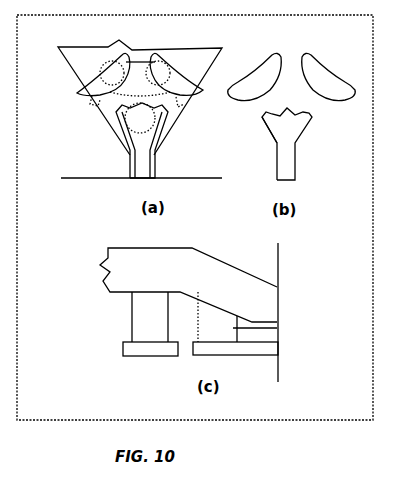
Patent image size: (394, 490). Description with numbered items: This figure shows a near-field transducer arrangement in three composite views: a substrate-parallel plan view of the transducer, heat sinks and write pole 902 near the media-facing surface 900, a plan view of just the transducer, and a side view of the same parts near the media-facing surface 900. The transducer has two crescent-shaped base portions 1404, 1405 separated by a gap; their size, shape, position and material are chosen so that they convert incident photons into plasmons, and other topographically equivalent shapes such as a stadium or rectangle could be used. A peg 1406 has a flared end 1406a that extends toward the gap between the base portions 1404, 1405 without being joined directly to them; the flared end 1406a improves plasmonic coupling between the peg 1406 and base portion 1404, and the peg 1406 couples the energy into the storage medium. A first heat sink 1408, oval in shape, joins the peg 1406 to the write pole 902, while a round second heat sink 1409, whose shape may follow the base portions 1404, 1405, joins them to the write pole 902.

The write pole 902 is at (93, 50).
The second heat sink 1409 is at (138, 62).
The base portion 1404 is at (98, 105).
The base portion 1405 is at (180, 110).
The first heat sink 1408 is at (124, 120).
The peg 1406 is at (137, 168).
The flared end 1406a is at (262, 117).
The media-facing surface 900 is at (95, 180).